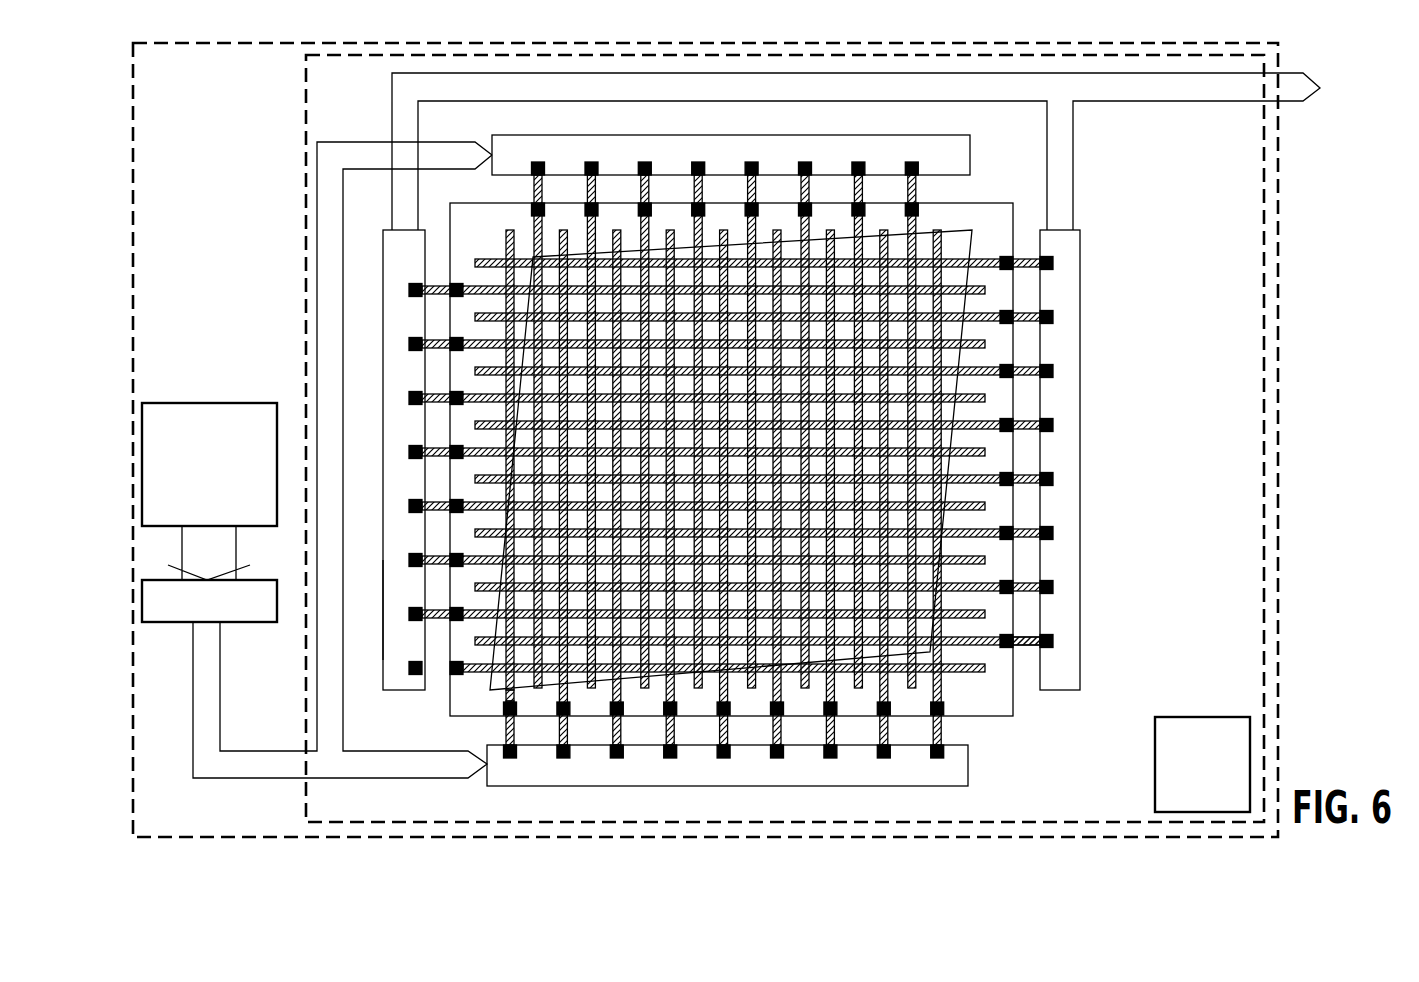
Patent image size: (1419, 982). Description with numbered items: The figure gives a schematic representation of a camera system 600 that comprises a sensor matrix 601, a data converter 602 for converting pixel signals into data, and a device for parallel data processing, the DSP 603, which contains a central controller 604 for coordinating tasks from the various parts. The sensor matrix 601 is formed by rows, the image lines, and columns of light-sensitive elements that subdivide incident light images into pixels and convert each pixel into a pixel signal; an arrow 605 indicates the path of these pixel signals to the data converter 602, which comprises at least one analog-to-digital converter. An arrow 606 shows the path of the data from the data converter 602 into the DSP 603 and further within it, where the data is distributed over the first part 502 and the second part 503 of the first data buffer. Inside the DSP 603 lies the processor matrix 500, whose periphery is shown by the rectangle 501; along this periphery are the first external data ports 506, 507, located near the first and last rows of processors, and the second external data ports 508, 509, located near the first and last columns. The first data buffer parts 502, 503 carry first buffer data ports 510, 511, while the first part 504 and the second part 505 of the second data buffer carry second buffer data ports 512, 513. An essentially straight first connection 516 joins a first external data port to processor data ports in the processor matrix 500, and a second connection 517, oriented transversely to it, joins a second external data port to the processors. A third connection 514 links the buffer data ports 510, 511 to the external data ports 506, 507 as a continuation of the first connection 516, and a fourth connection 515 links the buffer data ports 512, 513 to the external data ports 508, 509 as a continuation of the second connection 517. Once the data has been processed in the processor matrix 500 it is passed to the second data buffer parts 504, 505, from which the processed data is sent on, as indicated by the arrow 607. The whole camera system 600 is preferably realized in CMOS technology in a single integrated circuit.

The processor matrix 500 is at (970, 230).
The rectangle 501 is at (986, 716).
The first part of the first data buffer 502 is at (486, 782).
The second part of the first data buffer 503 is at (970, 158).
The first part of the second data buffer 504 is at (1080, 288).
The second part of the second data buffer 505 is at (395, 690).
The first external data ports 506 is at (504, 712).
The first external data ports 507 is at (548, 212).
The second external data ports 508 is at (1002, 651).
The second external data ports 509 is at (456, 676).
The first buffer data ports 510 is at (507, 759).
The first buffer data ports 511 is at (538, 162).
The second buffer data ports 512 is at (1053, 642).
The second buffer data ports 513 is at (383, 614).
The third connection 514 is at (534, 185).
The fourth connection 515 is at (418, 676).
The first connection 516 is at (515, 694).
The second connection 517 is at (980, 650).
The camera system 600 is at (1283, 340).
The sensor matrix 601 is at (176, 403).
The data converter 602 is at (165, 622).
The DSP 603 is at (1270, 283).
The central controller 604 is at (1203, 717).
The arrow 605 is at (238, 548).
The arrow 606 is at (256, 751).
The arrow 607 is at (1203, 103).